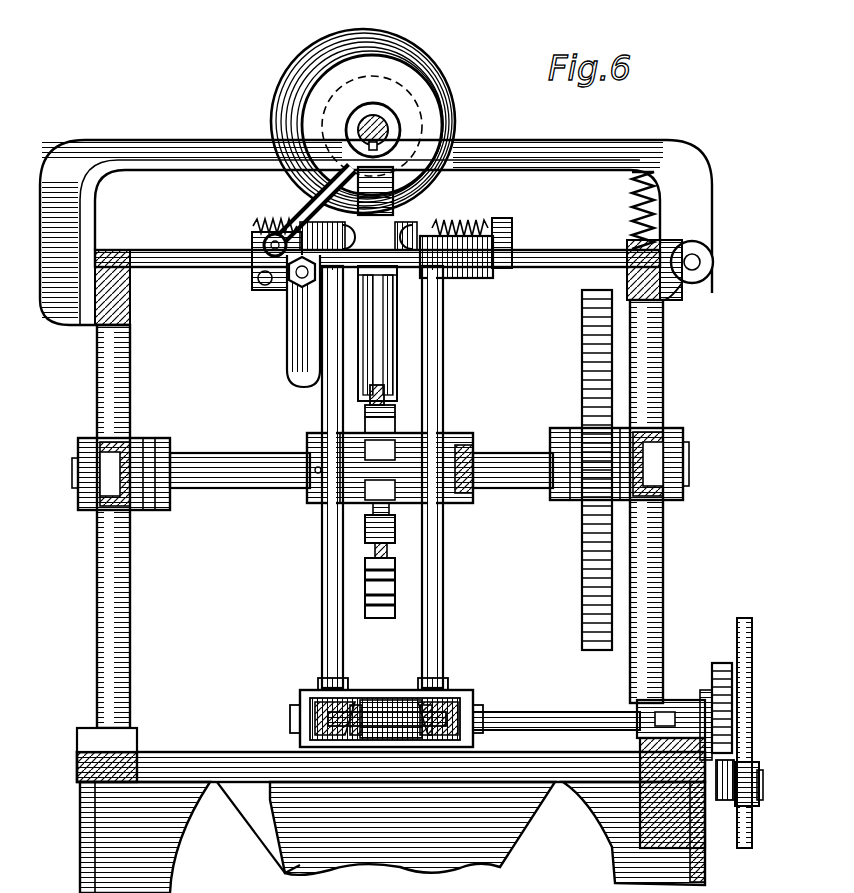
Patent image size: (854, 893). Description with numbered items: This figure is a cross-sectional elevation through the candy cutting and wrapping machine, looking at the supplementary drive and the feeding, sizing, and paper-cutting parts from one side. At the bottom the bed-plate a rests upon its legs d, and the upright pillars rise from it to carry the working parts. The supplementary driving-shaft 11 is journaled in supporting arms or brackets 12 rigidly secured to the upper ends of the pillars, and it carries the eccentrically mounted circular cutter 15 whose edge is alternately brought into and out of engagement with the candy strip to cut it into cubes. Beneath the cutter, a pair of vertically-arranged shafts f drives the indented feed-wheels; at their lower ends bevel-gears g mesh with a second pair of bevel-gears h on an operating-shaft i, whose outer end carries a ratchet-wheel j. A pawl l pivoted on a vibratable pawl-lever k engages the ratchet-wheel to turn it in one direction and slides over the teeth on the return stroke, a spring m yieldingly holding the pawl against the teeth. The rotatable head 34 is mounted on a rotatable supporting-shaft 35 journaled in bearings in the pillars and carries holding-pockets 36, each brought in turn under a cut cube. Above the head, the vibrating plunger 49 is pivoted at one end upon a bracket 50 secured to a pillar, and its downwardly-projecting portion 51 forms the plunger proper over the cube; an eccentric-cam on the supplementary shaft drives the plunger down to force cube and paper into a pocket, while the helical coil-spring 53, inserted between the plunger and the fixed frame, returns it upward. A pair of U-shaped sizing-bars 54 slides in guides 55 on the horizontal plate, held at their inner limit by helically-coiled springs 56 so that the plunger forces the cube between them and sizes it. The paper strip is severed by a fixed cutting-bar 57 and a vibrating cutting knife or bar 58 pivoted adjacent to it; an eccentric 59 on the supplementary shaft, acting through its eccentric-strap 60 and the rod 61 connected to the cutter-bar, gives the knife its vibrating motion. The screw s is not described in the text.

The supporting arms or brackets 12 is at (183, 118).
The vibrating plunger 49 is at (532, 152).
The circular cutter 15 is at (338, 40).
The eccentric-strap 60 is at (378, 60).
The eccentric 59 is at (428, 100).
The supplementary driving-shaft 11 is at (392, 134).
The downwardly-projecting portion 51 is at (400, 212).
The rod 61 is at (290, 205).
The helically-coiled springs 56 is at (256, 224).
The U-shaped sizing-bars 54 is at (520, 252).
The guides 55 is at (497, 278).
The fixed cutting-bar 57 is at (405, 265).
The vibrating cutting knife or bar 58 is at (294, 340).
The helical coil-spring 53 is at (630, 212).
The bracket 50 is at (676, 295).
The rotatable supporting-shaft 35 is at (502, 455).
The rotatable head 34 is at (386, 396).
The holding-pockets 36 is at (392, 543).
The vertically-arranged shafts f is at (322, 595).
The bevel-gears g is at (312, 708).
The second pair of bevel-gears h is at (318, 722).
The operating-shaft i is at (575, 712).
The ratchet-wheel j is at (712, 670).
The pawl-lever k is at (712, 790).
The pawl l is at (758, 763).
The set screw s is at (764, 798).
The spring m is at (724, 800).
The bed-plate a is at (173, 755).
The legs d is at (175, 880).